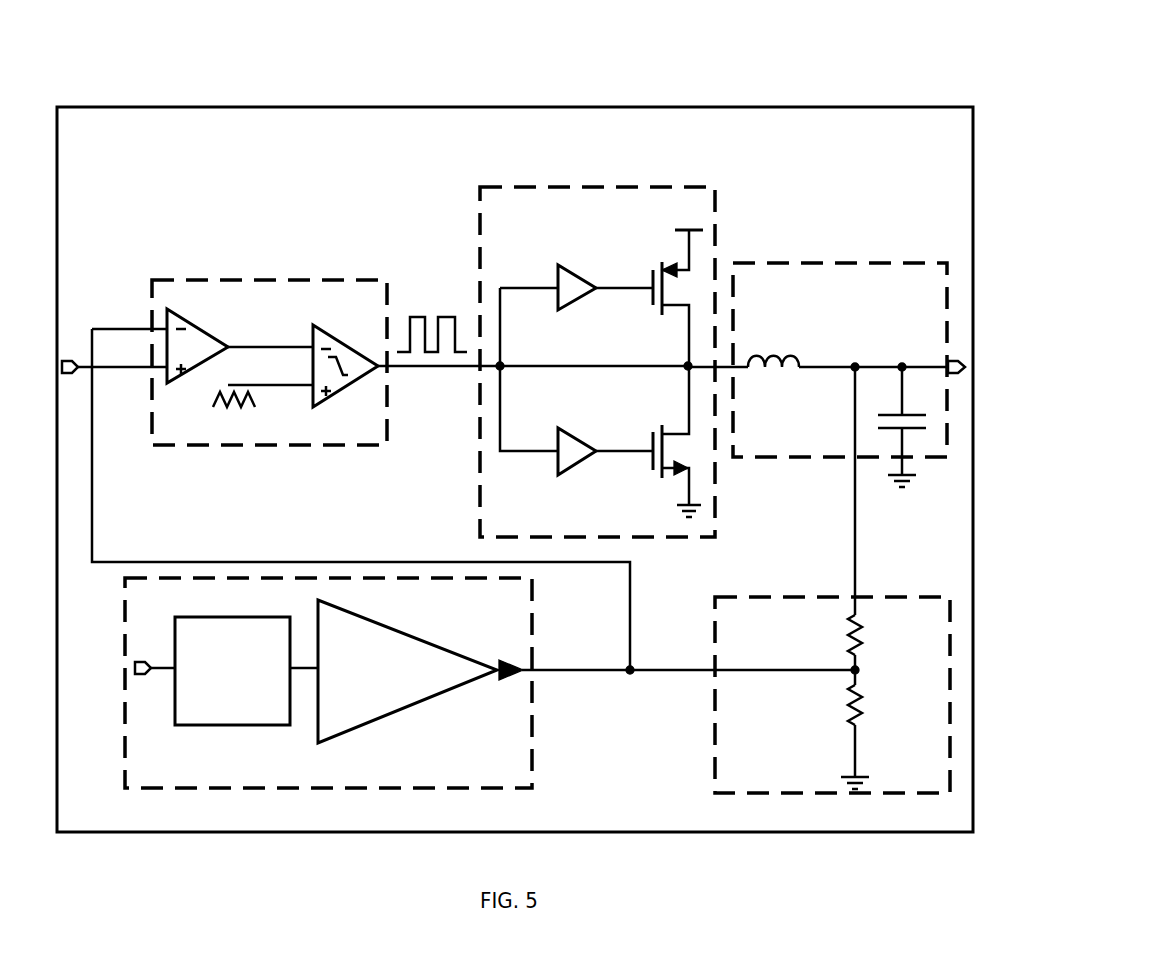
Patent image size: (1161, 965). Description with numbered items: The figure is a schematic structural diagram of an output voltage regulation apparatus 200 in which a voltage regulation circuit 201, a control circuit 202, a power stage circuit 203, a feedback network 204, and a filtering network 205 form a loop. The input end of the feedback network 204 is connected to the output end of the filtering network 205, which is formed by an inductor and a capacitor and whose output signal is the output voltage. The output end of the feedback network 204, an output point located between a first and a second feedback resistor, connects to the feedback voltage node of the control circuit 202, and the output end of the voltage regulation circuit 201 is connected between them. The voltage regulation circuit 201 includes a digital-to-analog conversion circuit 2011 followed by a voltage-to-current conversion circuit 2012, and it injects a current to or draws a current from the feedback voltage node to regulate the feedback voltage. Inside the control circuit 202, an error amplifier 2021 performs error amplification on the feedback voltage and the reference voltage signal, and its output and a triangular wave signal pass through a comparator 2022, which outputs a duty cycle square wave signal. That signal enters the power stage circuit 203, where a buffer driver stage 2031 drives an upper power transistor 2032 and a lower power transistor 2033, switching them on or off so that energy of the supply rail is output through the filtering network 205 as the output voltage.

The output voltage regulation apparatus 200 is at (772, 107).
The voltage regulation circuit 201 is at (125, 619).
The digital-to-analog conversion circuit 2011 is at (218, 617).
The voltage-to-current conversion circuit 2012 is at (403, 632).
The control circuit 202 is at (265, 280).
The error amplifier 2021 is at (202, 301).
The comparator 2022 is at (357, 327).
The power stage circuit 203 is at (575, 187).
The driver stage BUF 2031 is at (575, 284).
The upper power transistor 2032 is at (653, 318).
The lower power transistor 2033 is at (653, 482).
The feedback network 204 is at (733, 597).
The filtering network 205 is at (845, 263).